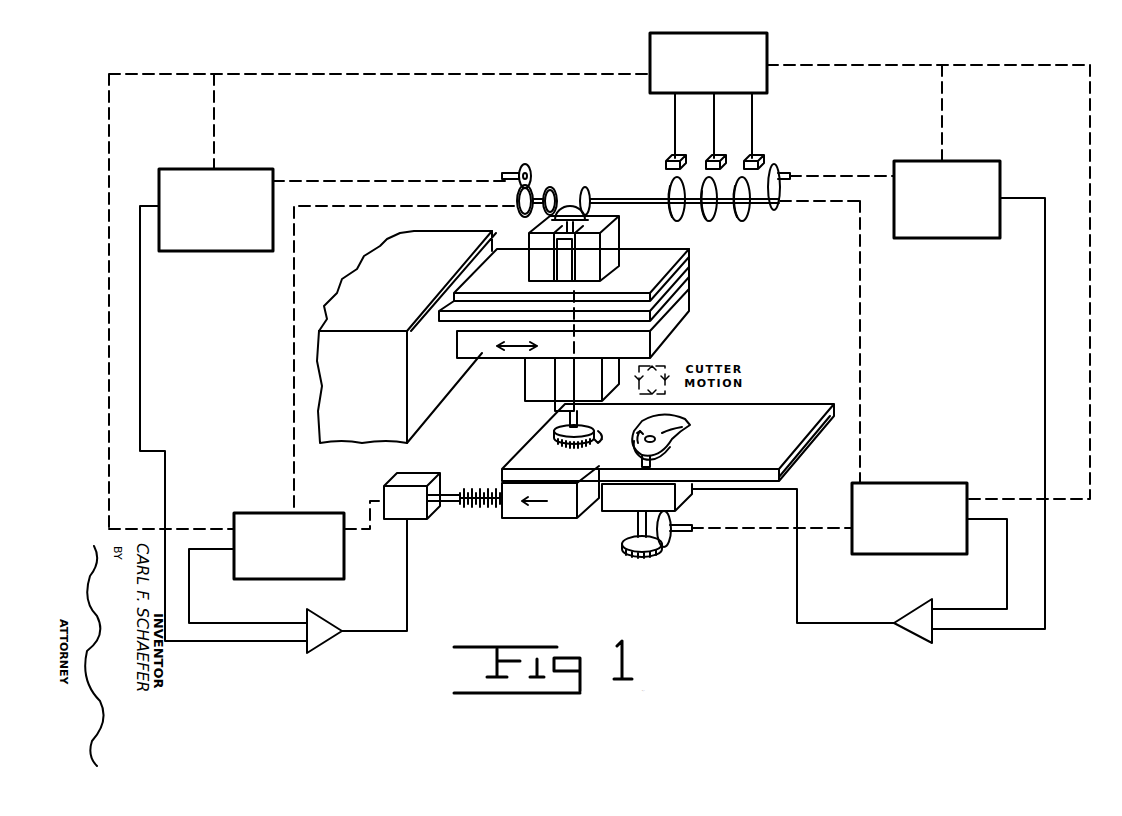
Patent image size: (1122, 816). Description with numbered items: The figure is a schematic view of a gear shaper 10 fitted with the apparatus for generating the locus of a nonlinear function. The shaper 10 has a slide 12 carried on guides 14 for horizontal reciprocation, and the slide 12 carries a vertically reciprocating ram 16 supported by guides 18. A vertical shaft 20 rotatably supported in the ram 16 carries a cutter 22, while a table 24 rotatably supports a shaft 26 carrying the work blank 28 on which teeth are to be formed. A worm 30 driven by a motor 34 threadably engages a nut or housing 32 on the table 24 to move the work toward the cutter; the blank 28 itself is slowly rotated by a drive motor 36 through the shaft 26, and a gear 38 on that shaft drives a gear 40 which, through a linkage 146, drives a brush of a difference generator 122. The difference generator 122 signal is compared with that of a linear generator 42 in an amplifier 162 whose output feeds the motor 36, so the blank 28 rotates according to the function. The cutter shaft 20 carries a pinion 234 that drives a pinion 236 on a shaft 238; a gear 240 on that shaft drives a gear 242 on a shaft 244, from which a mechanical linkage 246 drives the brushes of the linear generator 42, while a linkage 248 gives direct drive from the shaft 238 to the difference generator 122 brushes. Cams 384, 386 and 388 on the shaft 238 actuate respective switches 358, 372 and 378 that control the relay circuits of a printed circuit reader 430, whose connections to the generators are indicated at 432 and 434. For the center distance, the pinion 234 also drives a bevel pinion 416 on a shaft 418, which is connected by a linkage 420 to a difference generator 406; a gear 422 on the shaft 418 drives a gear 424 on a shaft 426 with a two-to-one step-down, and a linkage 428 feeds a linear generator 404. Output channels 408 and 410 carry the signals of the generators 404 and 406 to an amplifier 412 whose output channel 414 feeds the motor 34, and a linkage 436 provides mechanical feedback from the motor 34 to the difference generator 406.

The gear shaper 10 is at (424, 238).
The slide 12 is at (680, 325).
The guides 14 is at (600, 292).
The ram 16 is at (616, 237).
The guides 18 is at (530, 282).
The vertical shaft 20 is at (548, 416).
The cutter 22 is at (568, 446).
The table 24 is at (796, 407).
The shaft 26 is at (650, 460).
The work blank 28 is at (690, 421).
The worm 30 is at (480, 490).
The nut or housing 32 is at (530, 518).
The motor 34 is at (428, 470).
The drive motor 36 is at (680, 490).
The gear 38 is at (630, 550).
The gear 40 is at (672, 545).
The linear generator 42 is at (1000, 172).
The difference generator 122 is at (966, 480).
The linkage 146 is at (738, 530).
The amplifier 162 is at (914, 644).
The pinion 234 is at (568, 203).
The pinion 236 is at (588, 185).
The shaft 238 is at (630, 197).
The gear 240 is at (780, 204).
The gear 242 is at (786, 170).
The shaft 244 is at (786, 178).
The mechanical linkage 246 is at (884, 174).
The linkage 248 is at (856, 208).
The switch 358 is at (668, 156).
The normally open switch 372 is at (716, 156).
The switch 378 is at (756, 156).
The cam 384 is at (672, 220).
The cam 386 is at (710, 220).
The cam 388 is at (746, 220).
The linear generator 404 is at (255, 168).
The difference generator 406 is at (252, 512).
The output channel 408 is at (140, 405).
The output channel 410 is at (208, 514).
The amplifier 412 is at (326, 645).
The output channel 414 is at (406, 600).
The pinion 416 is at (548, 185).
The shaft 418 is at (527, 220).
The linkage 420 is at (300, 282).
The gear 422 is at (514, 208).
The gear 424 is at (523, 160).
The shaft 426 is at (508, 174).
The linkage 428 is at (405, 178).
The printed circuit reader 430 is at (746, 32).
The mechanical connection 432 is at (932, 64).
The mechanical connection 434 is at (512, 70).
The linkage 436 is at (366, 506).